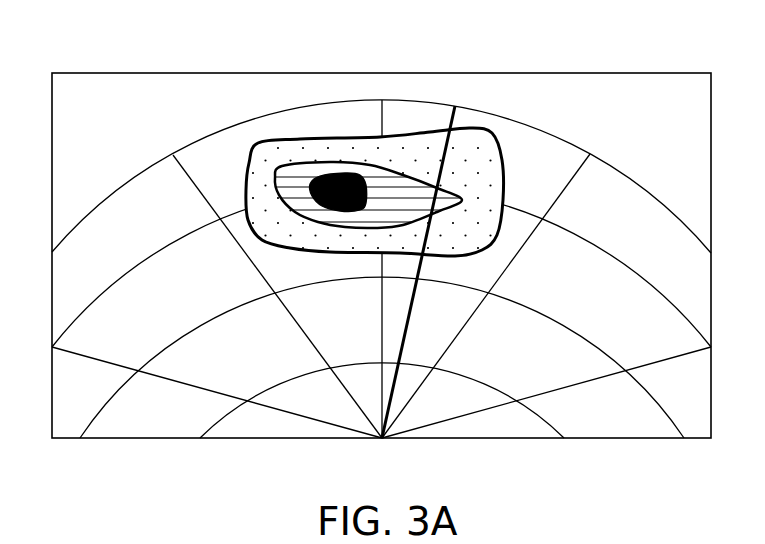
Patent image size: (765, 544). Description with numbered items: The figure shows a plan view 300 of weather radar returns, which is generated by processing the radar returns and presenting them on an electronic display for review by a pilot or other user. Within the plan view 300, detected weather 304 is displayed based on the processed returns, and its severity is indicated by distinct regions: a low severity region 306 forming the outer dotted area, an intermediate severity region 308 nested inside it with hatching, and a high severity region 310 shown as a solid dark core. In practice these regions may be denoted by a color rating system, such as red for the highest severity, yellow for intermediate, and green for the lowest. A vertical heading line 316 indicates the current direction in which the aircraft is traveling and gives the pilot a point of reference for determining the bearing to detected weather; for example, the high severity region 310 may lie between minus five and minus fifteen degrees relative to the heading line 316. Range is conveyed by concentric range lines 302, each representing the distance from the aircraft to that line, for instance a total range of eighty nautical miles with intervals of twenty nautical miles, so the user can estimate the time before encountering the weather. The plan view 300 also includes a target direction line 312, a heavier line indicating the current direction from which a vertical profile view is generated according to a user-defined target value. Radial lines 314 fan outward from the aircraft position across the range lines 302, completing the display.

The plan view 300 is at (213, 45).
The range lines 302 is at (137, 177).
The detected weather 304 is at (503, 148).
The low severity region 306 is at (258, 165).
The intermediate severity region 308 is at (297, 172).
The high severity region 310 is at (345, 185).
The target direction line 312 is at (456, 107).
The radial scan lines 314 is at (570, 185).
The heading line 316 is at (380, 350).